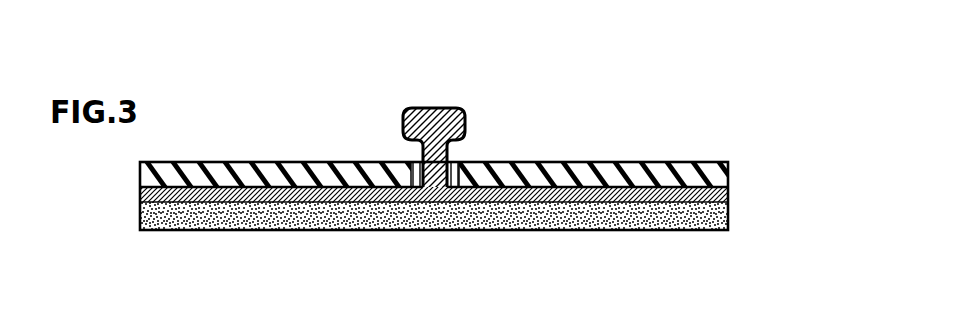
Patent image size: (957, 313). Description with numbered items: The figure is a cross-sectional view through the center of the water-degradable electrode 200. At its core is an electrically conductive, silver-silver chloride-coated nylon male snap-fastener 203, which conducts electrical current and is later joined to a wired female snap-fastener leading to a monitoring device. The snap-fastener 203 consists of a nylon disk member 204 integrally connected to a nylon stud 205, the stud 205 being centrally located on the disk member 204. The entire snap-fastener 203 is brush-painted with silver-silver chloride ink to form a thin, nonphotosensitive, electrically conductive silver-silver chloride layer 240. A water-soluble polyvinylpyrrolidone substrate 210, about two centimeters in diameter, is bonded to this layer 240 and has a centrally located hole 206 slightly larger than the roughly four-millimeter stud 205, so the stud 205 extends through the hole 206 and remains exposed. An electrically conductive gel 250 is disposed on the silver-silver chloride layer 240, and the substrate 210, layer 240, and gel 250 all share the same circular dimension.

The electrode 200 is at (684, 100).
The male snap-fastener 203 is at (382, 125).
The disk member 204 is at (140, 199).
The stud 205 is at (445, 108).
The hole 206 is at (462, 162).
The substrate 210 is at (287, 165).
The silver-silver chloride layer 240 is at (738, 194).
The electrically conductive gel 250 is at (418, 222).